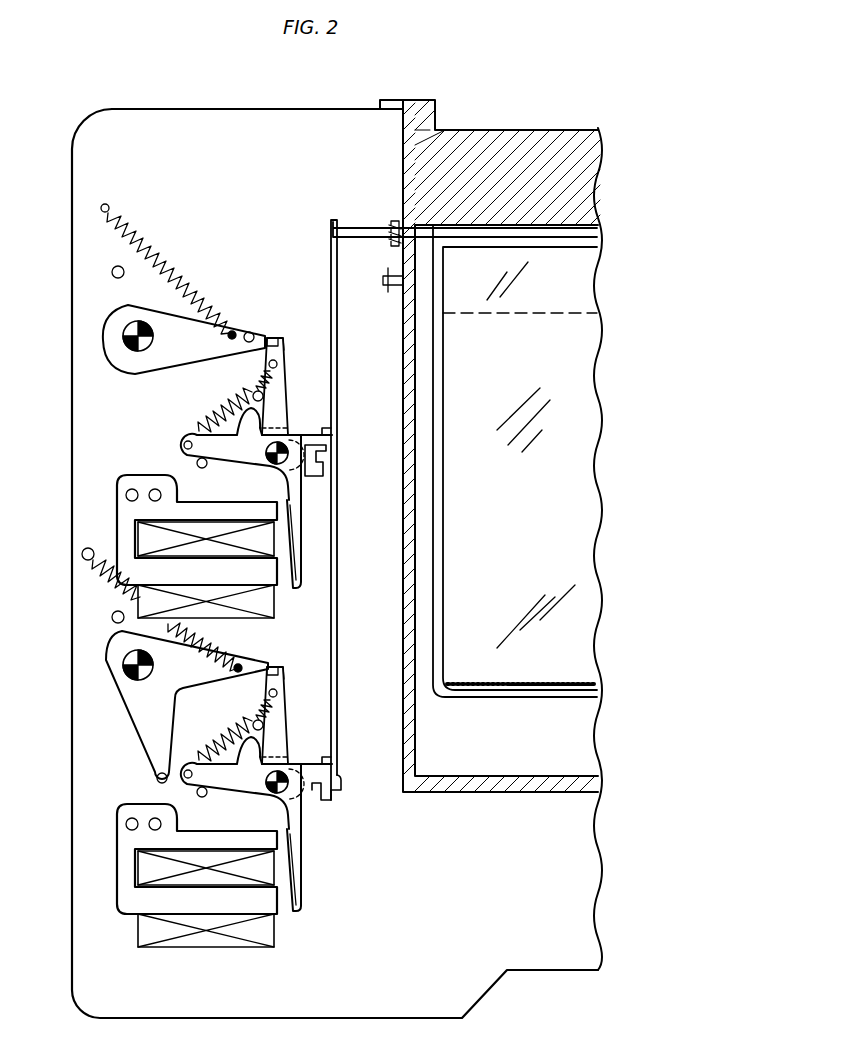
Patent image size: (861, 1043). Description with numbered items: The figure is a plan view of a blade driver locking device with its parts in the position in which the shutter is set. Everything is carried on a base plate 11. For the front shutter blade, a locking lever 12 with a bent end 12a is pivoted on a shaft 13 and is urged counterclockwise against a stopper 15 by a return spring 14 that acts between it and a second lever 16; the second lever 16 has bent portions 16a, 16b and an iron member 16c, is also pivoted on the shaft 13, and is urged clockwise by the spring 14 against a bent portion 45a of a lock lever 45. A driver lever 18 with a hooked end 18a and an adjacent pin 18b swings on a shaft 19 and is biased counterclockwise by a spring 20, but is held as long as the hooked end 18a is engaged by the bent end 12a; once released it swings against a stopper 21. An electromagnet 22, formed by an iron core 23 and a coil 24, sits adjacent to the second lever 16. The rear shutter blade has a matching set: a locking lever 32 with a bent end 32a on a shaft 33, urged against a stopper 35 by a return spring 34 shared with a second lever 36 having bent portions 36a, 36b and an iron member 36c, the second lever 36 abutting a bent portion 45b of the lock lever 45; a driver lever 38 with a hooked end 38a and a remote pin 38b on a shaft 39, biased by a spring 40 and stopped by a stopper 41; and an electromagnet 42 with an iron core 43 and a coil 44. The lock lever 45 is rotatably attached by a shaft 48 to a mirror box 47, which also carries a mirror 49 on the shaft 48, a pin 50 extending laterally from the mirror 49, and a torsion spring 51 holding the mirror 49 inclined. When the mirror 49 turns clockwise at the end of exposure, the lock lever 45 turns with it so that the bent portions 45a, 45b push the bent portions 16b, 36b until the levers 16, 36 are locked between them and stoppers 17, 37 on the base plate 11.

The base plate 11 is at (273, 122).
The locking lever 12 is at (285, 390).
The bent end 12a is at (284, 345).
The shaft 13 is at (270, 464).
The return spring 14 is at (205, 418).
The stopper 15 is at (257, 386).
The second lever 16 is at (296, 484).
The bent portion 16a is at (272, 424).
The bent portion 16b is at (330, 435).
The iron member 16c is at (291, 542).
The stopper 17 is at (203, 468).
The driver lever 18 is at (133, 372).
The hooked end 18a is at (273, 338).
The pin 18b is at (248, 332).
The shaft 19 is at (124, 330).
The spring 20 is at (155, 236).
The stopper 21 is at (112, 272).
The electromagnet 22 is at (118, 475).
The iron core 23 is at (252, 575).
The coil 24 is at (147, 538).
The locking lever 32 is at (285, 720).
The bent end 32a is at (284, 673).
The shaft 33 is at (270, 793).
The return spring 34 is at (205, 748).
The stopper 35 is at (257, 715).
The second lever 36 is at (303, 815).
The bent portion 36a is at (272, 752).
The bent portion 36b is at (330, 764).
The iron member 36c is at (291, 872).
The stopper 37 is at (203, 797).
The driver lever 38 is at (127, 700).
The hooked end 38a is at (272, 665).
The pin 38b is at (157, 775).
The shaft 39 is at (124, 660).
The spring 40 is at (92, 563).
The stopper 41 is at (110, 617).
The electromagnet 42 is at (122, 811).
The iron core 43 is at (250, 903).
The coil 44 is at (147, 868).
The lock lever 45 is at (338, 610).
The bent portion 45a is at (322, 460).
The bent portion 45b is at (325, 790).
The mirror box 47 is at (631, 240).
The shaft 48 is at (366, 228).
The mirror 49 is at (588, 492).
The pin 50 is at (391, 290).
The torsion spring 51 is at (391, 240).